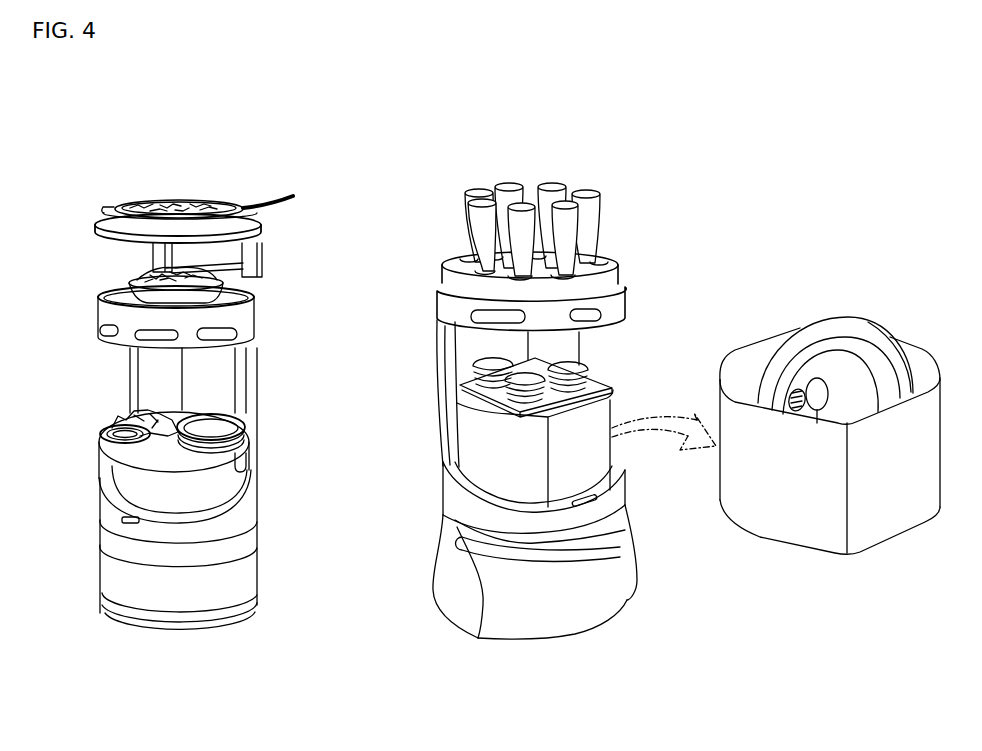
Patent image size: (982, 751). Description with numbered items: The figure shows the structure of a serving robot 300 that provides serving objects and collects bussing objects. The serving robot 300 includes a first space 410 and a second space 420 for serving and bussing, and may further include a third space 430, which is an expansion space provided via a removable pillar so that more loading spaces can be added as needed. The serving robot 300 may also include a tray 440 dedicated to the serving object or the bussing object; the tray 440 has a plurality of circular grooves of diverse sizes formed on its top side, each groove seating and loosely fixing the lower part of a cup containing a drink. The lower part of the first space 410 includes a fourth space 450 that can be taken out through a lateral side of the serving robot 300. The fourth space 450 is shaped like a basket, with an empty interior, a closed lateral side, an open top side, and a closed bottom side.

The serving robot 300 is at (109, 108).
The first space 410 is at (240, 460).
The second space 420 is at (256, 329).
The third space 430 is at (252, 228).
The tray 440 is at (455, 279).
The fourth space 450 is at (477, 447).